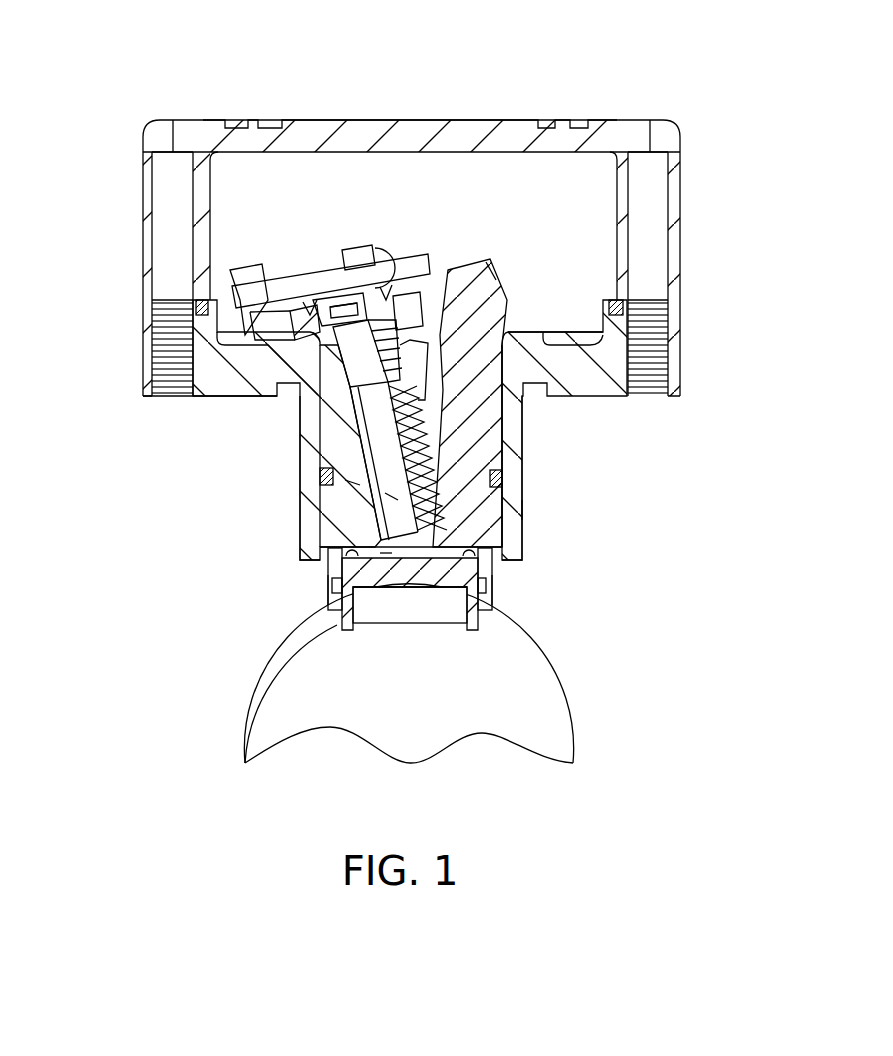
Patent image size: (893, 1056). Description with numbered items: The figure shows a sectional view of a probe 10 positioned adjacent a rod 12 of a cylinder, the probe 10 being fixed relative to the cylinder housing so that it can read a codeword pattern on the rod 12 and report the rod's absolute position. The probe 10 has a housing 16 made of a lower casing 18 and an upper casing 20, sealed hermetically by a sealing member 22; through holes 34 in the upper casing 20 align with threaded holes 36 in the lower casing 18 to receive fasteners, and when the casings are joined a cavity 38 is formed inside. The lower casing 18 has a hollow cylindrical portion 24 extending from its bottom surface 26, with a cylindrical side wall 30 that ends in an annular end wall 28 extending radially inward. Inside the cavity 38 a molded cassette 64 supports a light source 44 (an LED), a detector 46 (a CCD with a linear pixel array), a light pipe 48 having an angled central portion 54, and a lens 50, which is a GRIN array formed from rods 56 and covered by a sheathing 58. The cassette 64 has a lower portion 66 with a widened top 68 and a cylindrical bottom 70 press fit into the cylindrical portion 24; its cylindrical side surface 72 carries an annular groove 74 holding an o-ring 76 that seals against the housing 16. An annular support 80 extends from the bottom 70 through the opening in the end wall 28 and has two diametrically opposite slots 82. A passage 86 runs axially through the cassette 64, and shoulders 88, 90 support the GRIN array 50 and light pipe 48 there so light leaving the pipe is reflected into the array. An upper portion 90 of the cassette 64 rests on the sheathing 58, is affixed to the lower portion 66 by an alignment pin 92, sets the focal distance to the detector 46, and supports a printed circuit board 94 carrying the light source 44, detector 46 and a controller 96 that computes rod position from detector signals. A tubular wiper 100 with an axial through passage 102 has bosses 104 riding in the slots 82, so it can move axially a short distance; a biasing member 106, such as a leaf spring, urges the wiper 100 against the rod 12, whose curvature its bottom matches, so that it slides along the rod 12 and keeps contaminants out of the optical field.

The probe 10 is at (98, 98).
The rod 12 is at (540, 711).
The housing 16 is at (684, 192).
The lower casing 18 is at (248, 398).
The upper casing 20 is at (340, 117).
The sealing member 22 is at (193, 313).
The cylindrical portion 24 is at (560, 512).
The bottom surface 26 is at (610, 397).
The annular end wall 28 is at (497, 560).
The cylindrical side wall 30 is at (515, 432).
The through holes 34 is at (165, 180).
The threaded holes 36 is at (150, 377).
The cavity 38 is at (337, 183).
The light source 44 is at (433, 263).
The detector 46 is at (268, 297).
The light pipe 48 is at (497, 472).
The lens 50 is at (373, 445).
The angled central portion 54 is at (424, 413).
The rods 56 is at (393, 493).
The sheathing 58 is at (397, 405).
The cassette 64 is at (514, 283).
The lower portion 66 is at (489, 282).
The widened top 68 is at (240, 280).
The cylindrical bottom 70 is at (477, 518).
The cylindrical side surface 72 is at (527, 513).
The annular groove 74 is at (380, 477).
The o-ring 76 is at (320, 480).
The annular support 80 is at (500, 607).
The slots 82 is at (332, 573).
The passage 86 is at (420, 293).
The shoulder 88 is at (402, 553).
The upper portion 90 is at (370, 303).
The alignment pin 92 is at (457, 327).
The printed circuit board 94 is at (343, 297).
The controller 96 is at (357, 255).
The wiper 100 is at (338, 627).
The through passage 102 is at (424, 590).
The bosses 104 is at (328, 587).
The biasing member 106 is at (388, 553).